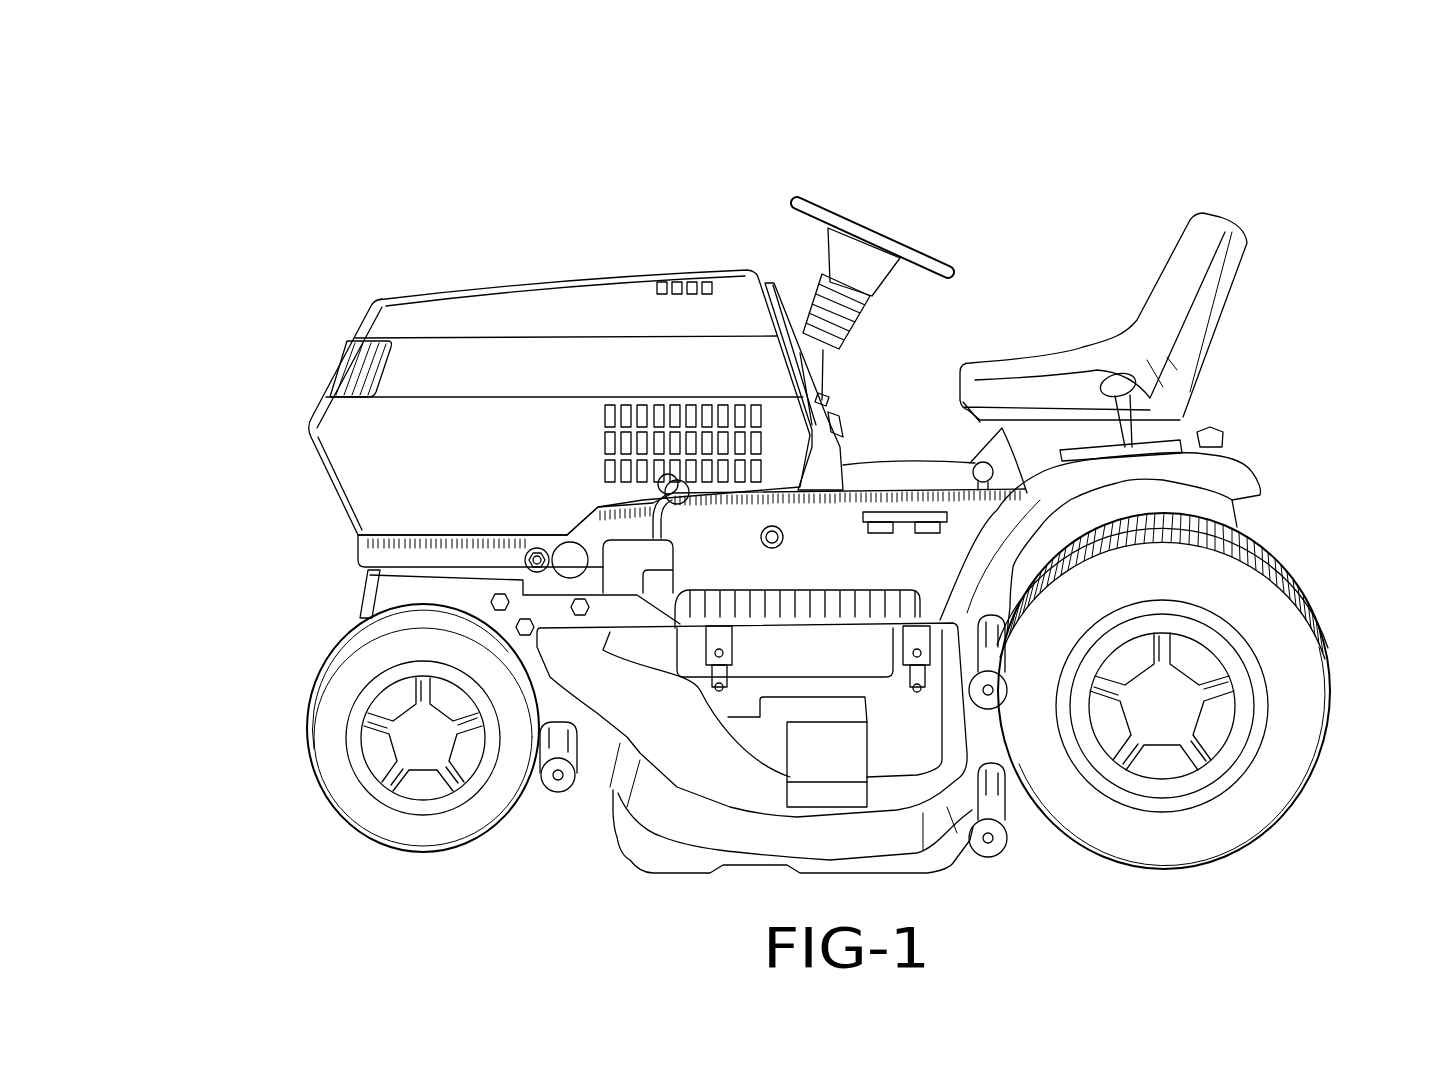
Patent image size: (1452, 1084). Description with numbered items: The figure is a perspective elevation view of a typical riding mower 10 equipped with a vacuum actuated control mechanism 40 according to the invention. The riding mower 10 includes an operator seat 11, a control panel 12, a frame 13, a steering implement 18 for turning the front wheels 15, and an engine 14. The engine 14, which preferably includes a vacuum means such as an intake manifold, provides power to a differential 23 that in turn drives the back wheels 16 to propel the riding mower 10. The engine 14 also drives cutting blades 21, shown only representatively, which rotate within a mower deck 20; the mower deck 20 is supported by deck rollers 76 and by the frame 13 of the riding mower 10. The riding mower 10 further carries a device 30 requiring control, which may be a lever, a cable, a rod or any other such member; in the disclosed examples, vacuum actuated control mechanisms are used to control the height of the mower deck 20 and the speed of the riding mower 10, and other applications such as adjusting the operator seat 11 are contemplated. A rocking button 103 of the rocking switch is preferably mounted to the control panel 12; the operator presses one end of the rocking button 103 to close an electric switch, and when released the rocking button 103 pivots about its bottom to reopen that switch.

The riding mower 10 is at (1085, 203).
The operator seat 11 is at (1205, 218).
The control panel 12 is at (843, 450).
The frame 13 is at (387, 593).
The engine 14 is at (333, 360).
The front wheels 15 is at (325, 735).
The back wheels 16 is at (1313, 708).
The steering implement 18 is at (907, 226).
The mower deck 20 is at (620, 787).
The cutting blades 21 is at (722, 882).
The differential 23 is at (328, 508).
The device 30 is at (1285, 410).
The vacuum actuated control mechanism 40 is at (520, 256).
The deck rollers 76 is at (552, 787).
The rocking button 103 is at (840, 416).